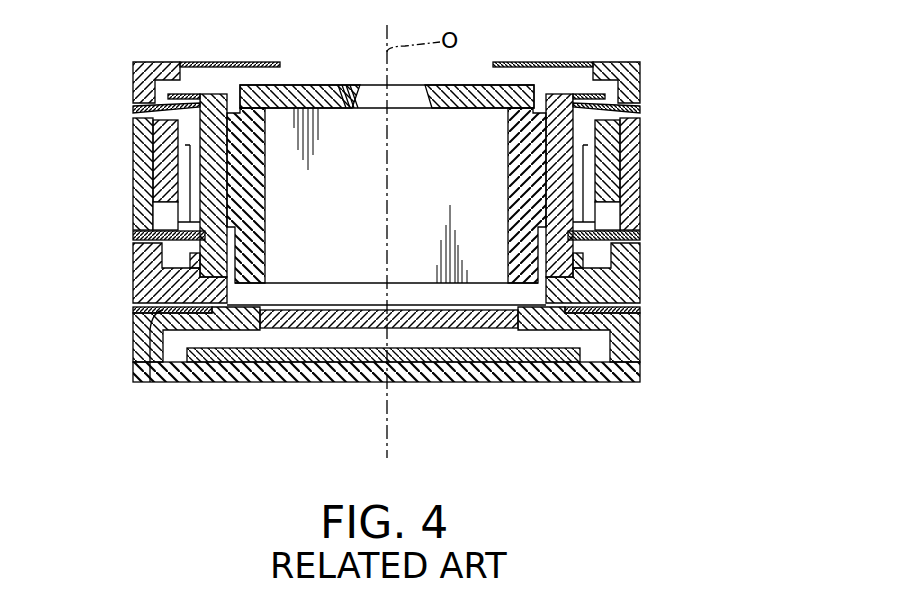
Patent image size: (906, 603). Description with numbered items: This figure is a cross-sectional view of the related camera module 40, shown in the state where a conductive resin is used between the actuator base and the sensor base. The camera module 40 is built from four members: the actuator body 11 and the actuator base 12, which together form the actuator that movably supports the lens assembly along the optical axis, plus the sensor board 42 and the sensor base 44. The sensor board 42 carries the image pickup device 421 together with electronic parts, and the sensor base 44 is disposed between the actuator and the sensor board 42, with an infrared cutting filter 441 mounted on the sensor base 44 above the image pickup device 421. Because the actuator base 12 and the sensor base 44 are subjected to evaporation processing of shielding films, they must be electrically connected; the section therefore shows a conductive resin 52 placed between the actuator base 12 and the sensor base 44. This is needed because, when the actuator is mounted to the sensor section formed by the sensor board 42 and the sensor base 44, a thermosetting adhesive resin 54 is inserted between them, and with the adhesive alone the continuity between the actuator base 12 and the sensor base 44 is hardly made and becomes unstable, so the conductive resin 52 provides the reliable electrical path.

The camera module 40 is at (722, 88).
The actuator body 11 is at (690, 172).
The actuator base 12 is at (641, 272).
The sensor board 42 is at (203, 384).
The image pickup device 421 is at (277, 384).
The sensor base 44 is at (641, 348).
The infrared cutting filter 441 is at (356, 384).
The conductive resin 52 is at (131, 304).
The thermosetting adhesive resin 54 is at (150, 384).